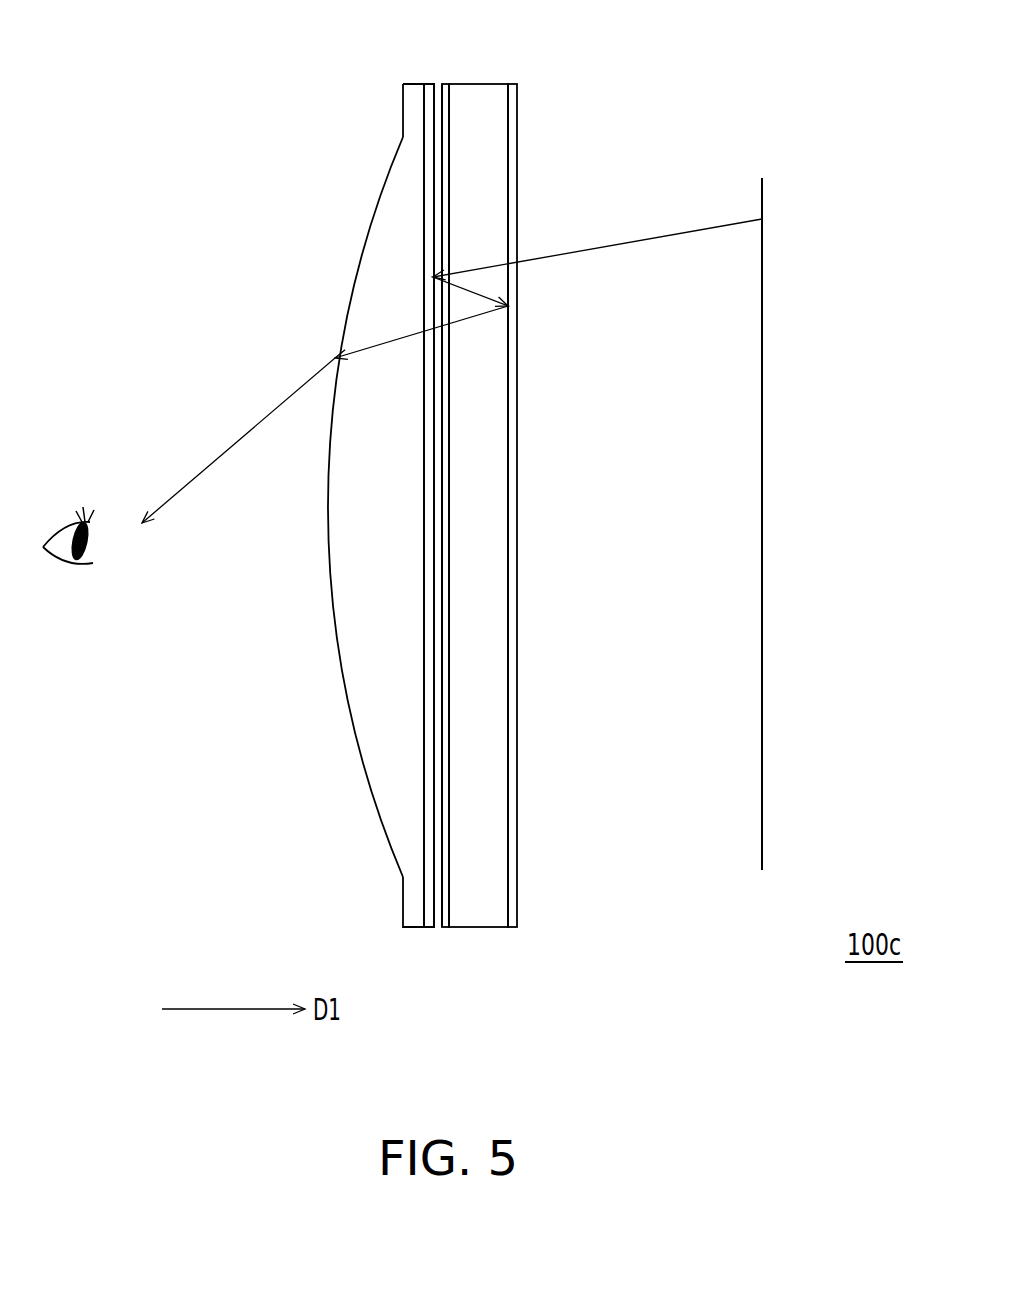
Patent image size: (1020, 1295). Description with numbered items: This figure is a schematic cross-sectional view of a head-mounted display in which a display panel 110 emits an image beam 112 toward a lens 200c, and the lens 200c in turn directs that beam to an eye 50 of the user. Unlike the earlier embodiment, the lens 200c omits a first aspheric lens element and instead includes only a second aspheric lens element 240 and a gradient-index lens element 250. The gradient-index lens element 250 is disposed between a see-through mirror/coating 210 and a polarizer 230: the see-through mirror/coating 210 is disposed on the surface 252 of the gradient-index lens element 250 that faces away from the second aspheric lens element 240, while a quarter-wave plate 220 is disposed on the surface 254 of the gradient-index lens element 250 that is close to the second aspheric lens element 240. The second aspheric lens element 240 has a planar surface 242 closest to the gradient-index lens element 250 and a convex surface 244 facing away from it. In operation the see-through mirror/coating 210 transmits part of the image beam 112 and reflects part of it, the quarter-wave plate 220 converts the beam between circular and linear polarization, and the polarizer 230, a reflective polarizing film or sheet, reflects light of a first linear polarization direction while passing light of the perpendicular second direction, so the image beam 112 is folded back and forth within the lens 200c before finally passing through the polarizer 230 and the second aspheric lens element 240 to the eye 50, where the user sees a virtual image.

The eye 50 is at (70, 560).
The display panel 110 is at (763, 662).
The image beam 112 is at (690, 228).
The lens 200c is at (552, 898).
The see-through mirror/coating 210 is at (510, 108).
The quarter-wave plate 220 is at (447, 108).
The polarizer 230 is at (428, 108).
The second aspheric lens element 240 is at (385, 748).
The surface 242 is at (425, 522).
The surface 244 is at (365, 222).
The gradient-index lens element 250 is at (477, 900).
The surface 252 is at (510, 672).
The surface 254 is at (438, 160).